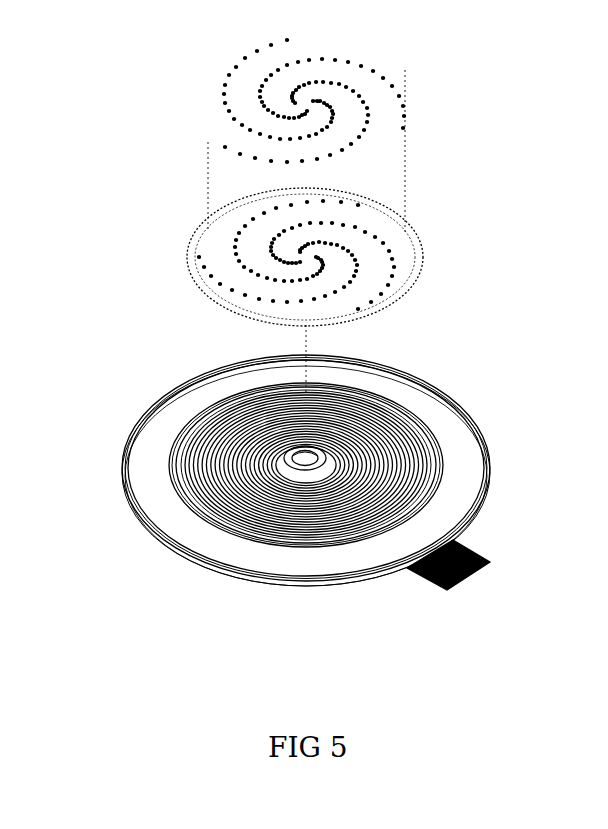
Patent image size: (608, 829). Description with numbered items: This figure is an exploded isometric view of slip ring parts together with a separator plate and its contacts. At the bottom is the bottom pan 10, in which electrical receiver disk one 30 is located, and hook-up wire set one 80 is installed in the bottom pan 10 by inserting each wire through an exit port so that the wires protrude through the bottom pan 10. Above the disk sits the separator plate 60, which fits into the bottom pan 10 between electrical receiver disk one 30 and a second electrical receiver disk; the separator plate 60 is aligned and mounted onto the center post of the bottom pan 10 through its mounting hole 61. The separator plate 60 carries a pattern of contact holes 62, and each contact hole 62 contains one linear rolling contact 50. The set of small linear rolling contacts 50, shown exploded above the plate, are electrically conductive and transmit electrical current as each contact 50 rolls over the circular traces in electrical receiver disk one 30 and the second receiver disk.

The bottom pan 10 is at (316, 472).
The electrical receiver disk one 30 is at (168, 462).
The linear rolling contact 50 is at (405, 68).
The separator plate 60 is at (320, 238).
The mounting hole 61 is at (290, 247).
The contact hole 62 is at (410, 288).
The hook-up wire set one 80 is at (490, 562).